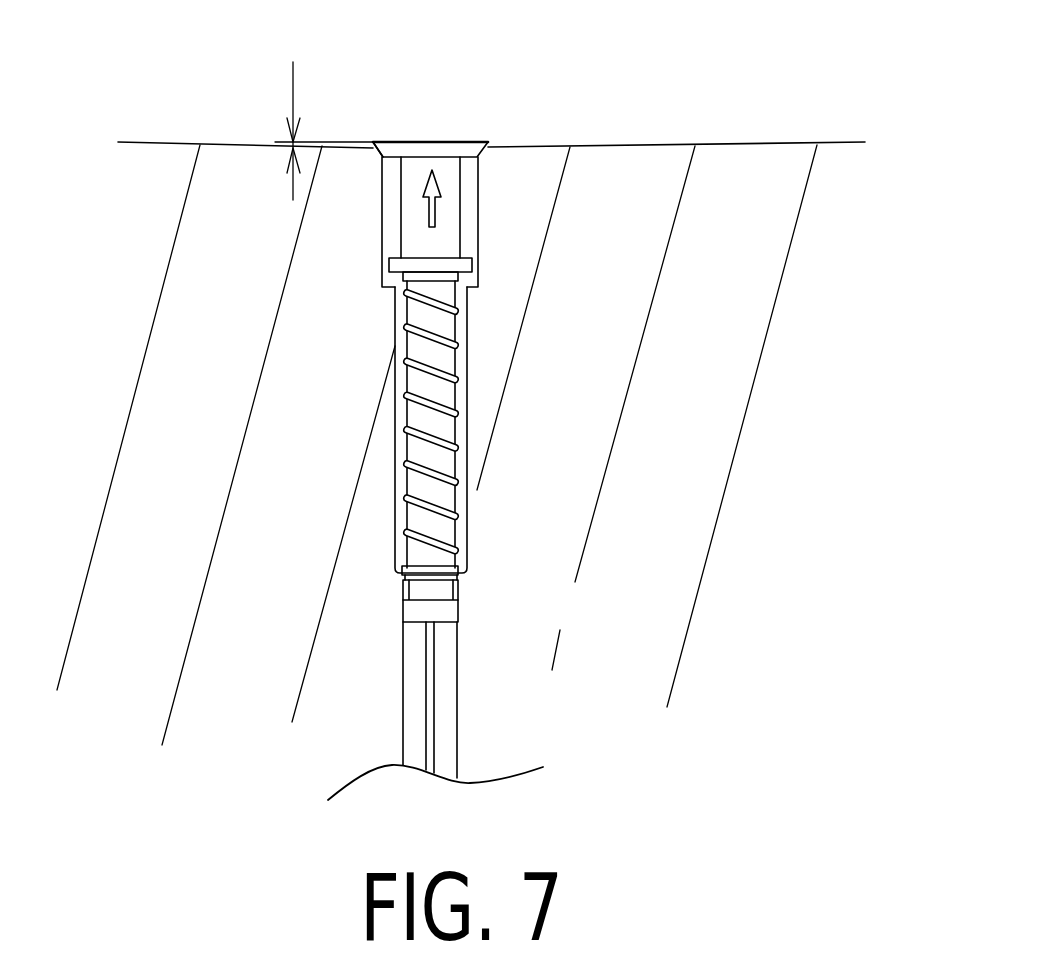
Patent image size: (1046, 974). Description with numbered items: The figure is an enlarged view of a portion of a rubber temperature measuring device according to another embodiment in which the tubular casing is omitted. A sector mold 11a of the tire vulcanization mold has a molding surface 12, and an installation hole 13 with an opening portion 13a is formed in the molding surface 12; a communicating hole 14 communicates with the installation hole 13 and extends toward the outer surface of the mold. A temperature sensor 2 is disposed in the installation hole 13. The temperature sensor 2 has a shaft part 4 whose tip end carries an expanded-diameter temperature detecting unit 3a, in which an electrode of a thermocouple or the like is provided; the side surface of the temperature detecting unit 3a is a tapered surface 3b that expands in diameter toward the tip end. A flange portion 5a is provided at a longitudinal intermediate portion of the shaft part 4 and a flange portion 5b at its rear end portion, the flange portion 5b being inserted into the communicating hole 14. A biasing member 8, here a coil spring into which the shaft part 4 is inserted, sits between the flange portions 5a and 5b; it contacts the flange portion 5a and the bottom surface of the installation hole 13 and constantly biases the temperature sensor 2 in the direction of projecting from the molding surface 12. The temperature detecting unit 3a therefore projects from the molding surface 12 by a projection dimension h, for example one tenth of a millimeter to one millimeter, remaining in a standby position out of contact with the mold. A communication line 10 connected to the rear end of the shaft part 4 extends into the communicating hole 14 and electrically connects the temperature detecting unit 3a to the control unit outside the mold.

The temperature sensor 2 is at (472, 325).
The temperature detecting unit 3a is at (432, 148).
The tapered surface 3b is at (481, 156).
The shaft part 4 is at (440, 395).
The flange portion 5a is at (470, 265).
The flange portion 5b is at (450, 610).
The biasing member 8 is at (443, 472).
The communication line 10 is at (432, 712).
The sector mold 11a is at (213, 148).
The molding surface 12 is at (677, 146).
The installation hole 13 is at (400, 420).
The opening portion 13a is at (386, 150).
The communicating hole 14 is at (400, 755).
The projection dimension h is at (322, 131).